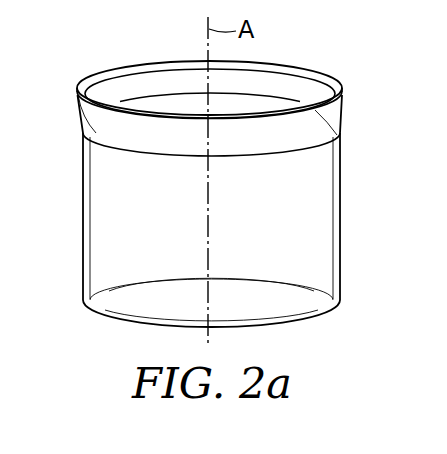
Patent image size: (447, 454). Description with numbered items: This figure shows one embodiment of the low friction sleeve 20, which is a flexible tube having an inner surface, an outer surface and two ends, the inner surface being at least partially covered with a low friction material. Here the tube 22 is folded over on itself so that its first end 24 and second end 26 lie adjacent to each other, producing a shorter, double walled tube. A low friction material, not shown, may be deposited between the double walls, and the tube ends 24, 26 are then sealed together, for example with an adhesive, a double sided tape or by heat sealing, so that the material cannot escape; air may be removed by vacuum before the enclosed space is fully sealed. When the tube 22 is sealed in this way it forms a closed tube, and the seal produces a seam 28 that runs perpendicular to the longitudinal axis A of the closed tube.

The low friction sleeve 20 is at (181, 38).
The tube 22 is at (272, 305).
The first end 24 is at (287, 67).
The second end 26 is at (319, 80).
The seam 28 is at (105, 147).